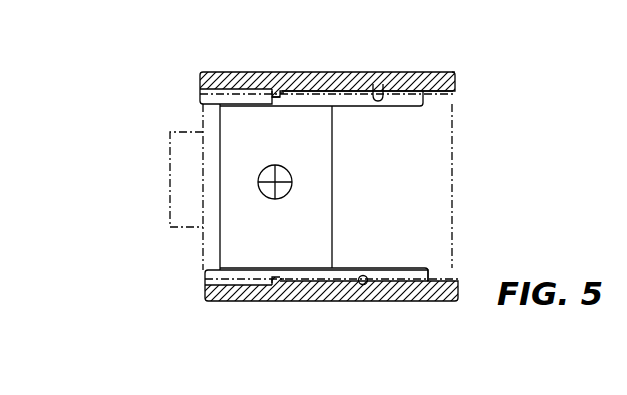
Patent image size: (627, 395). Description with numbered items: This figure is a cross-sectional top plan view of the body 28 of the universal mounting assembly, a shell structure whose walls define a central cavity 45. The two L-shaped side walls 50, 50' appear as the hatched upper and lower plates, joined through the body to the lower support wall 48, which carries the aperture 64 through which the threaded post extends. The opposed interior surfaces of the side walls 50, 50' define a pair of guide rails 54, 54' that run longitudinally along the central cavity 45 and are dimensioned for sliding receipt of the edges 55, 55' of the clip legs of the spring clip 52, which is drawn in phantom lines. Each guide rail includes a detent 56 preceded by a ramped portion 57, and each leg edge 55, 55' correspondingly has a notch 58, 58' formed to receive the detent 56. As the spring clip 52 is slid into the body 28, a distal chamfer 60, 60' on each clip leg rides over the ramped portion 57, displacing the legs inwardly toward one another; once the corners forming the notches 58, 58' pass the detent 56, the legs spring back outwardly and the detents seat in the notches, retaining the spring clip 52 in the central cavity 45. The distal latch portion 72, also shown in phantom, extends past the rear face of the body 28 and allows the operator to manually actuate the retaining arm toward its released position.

The side wall 50' is at (327, 62).
The notch 58' is at (292, 62).
The edge of clip leg 55' is at (367, 57).
The guide rail 54' is at (404, 60).
The body 28 is at (460, 76).
The distal chamfer 60' is at (307, 161).
The distal latch portion 72 is at (166, 147).
The spring clip 52 is at (460, 142).
The central cavity 45 is at (384, 152).
The lower support wall 48 is at (333, 196).
The aperture 64 is at (262, 193).
The detent 56 is at (276, 95).
The ramped portion 57 is at (284, 92).
The side wall 50 is at (331, 306).
The notch 58 is at (297, 306).
The edge of clip leg 55 is at (340, 310).
The guide rail 54 is at (351, 310).
The distal chamfer 60 is at (298, 288).